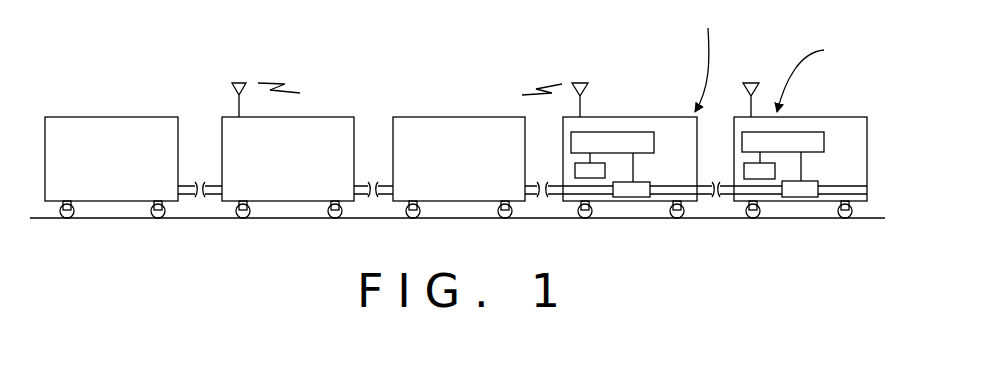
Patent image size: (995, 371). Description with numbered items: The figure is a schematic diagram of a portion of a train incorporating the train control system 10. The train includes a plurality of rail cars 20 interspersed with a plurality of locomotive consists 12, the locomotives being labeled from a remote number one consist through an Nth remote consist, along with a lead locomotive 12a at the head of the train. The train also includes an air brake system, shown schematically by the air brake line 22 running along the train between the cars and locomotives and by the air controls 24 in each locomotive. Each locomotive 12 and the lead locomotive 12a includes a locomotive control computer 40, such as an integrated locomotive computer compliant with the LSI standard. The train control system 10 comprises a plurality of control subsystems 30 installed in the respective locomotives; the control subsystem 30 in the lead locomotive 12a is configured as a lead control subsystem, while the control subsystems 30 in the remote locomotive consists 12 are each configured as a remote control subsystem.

The train control system 10 is at (564, 52).
The locomotive consist 12 is at (335, 117).
The lead locomotive 12a is at (868, 128).
The rail car 20 is at (74, 117).
The air brake line 22 is at (532, 186).
The air controls 24 is at (641, 182).
The control subsystem 30 is at (659, 140).
The locomotive control computer 40 is at (575, 166).